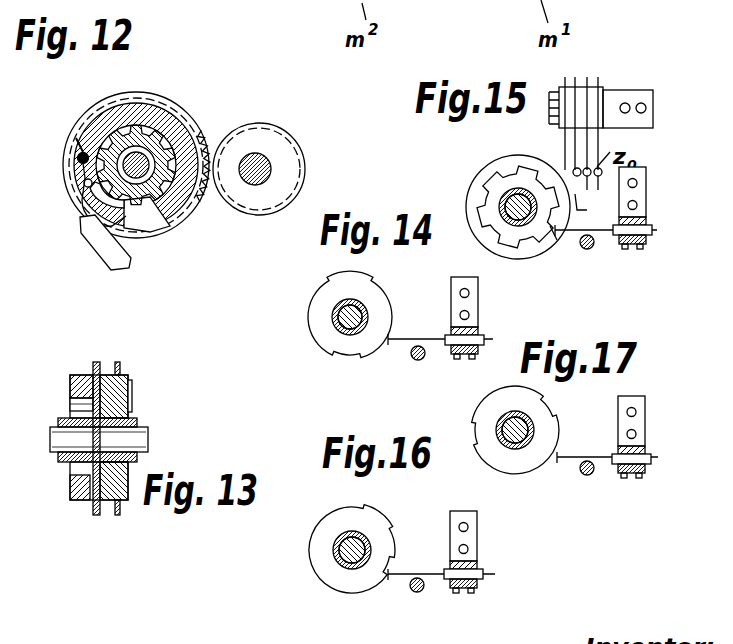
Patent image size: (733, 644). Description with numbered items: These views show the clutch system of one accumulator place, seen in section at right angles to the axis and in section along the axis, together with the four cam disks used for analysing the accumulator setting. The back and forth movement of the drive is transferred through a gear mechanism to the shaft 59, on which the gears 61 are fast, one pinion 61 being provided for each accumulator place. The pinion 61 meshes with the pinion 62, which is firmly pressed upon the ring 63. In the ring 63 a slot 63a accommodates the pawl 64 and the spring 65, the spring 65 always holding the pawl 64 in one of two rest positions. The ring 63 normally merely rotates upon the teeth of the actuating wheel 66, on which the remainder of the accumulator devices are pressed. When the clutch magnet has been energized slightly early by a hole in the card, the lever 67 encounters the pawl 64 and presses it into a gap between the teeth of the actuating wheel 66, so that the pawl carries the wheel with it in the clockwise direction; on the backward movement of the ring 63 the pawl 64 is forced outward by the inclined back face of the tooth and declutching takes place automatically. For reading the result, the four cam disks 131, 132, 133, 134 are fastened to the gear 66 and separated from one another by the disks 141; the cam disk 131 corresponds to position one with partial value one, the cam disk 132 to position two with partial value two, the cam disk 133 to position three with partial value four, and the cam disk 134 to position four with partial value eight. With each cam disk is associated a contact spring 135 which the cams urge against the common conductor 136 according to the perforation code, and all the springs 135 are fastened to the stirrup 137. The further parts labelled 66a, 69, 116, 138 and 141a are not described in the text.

In FIG. 12, the shaft 59 is at (254, 155).
In FIG. 12, the pinion 61 is at (252, 200).
In FIG. 12, the pinion 62 is at (178, 222).
In FIG. 13, the pinion 62 is at (97, 362).
In FIG. 12, the ring 63 is at (162, 212).
In FIG. 13, the ring 63 is at (73, 375).
In FIG. 12, the slot 63a is at (137, 218).
In FIG. 12, the pawl 64 is at (95, 203).
In FIG. 12, the spring 65 is at (80, 170).
In FIG. 12, the actuating wheel 66 is at (112, 143).
In FIG. 13, the actuating wheel 66 is at (85, 407).
In FIG. 13, the hub flange 66a is at (73, 500).
In FIG. 12, the lever 67 is at (105, 258).
In FIG. 12, the teeth 69 is at (210, 137).
In FIG. 12, the housing ring 116 is at (160, 110).
In FIG. 15, the cam disk 131 is at (492, 192).
In FIG. 14, the cam disk 132 is at (322, 302).
In FIG. 13, the cam disk 133 is at (128, 405).
In FIG. 17, the cam disk 133 is at (522, 462).
In FIG. 13, the cam disk 134 is at (110, 364).
In FIG. 16, the cam disk 134 is at (320, 552).
In FIG. 14, the contact spring 135 is at (421, 337).
In FIG. 15, the contact spring 135 is at (604, 233).
In FIG. 17, the contact spring 135 is at (585, 455).
In FIG. 16, the contact spring 135 is at (410, 572).
In FIG. 14, the common conductor 136 is at (410, 360).
In FIG. 15, the common conductor 136 is at (583, 250).
In FIG. 17, the common conductor 136 is at (585, 477).
In FIG. 16, the common conductor 136 is at (410, 592).
In FIG. 14, the stirrup 137 is at (482, 330).
In FIG. 15, the stirrup 137 is at (640, 250).
In FIG. 17, the stirrup 137 is at (620, 462).
In FIG. 16, the stirrup 137 is at (478, 568).
In FIG. 14, the nut 138 is at (455, 350).
In FIG. 17, the nut 138 is at (645, 472).
In FIG. 16, the nut 138 is at (477, 583).
In FIG. 13, the disk 141 is at (117, 513).
In FIG. 15, the disk 141 is at (497, 159).
In FIG. 15, the projection 141a is at (556, 238).